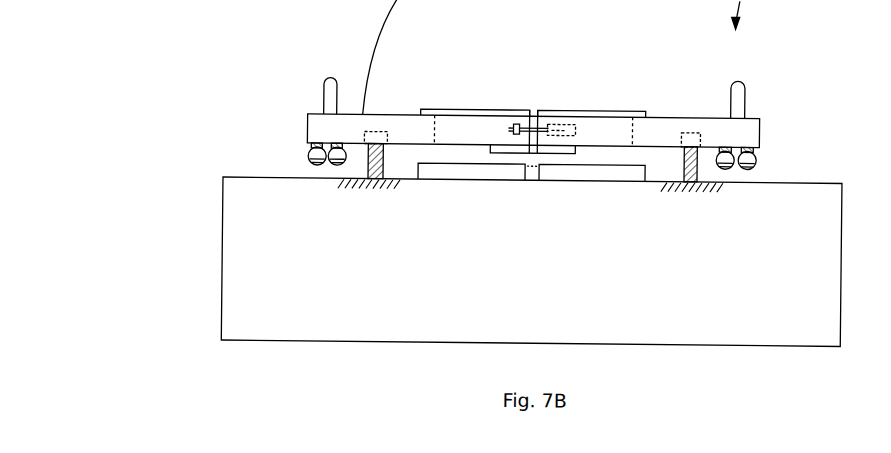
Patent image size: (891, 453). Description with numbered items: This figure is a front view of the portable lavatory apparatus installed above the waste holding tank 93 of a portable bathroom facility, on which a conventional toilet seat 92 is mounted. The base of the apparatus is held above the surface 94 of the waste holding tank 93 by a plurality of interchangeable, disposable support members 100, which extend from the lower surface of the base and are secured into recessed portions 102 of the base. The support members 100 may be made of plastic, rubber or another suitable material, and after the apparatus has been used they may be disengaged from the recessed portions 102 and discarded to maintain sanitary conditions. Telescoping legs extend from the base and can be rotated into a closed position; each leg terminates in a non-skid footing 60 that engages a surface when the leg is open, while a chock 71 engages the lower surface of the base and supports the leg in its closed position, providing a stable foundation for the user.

The non-skid footing 60 is at (757, 157).
The chock 71 is at (759, 144).
The conventional toilet seat 92 is at (433, 178).
The waste holding tank 93 is at (222, 227).
The surface of waste holding tank 94 is at (355, 184).
The interchangeable, disposable support member 100 is at (683, 160).
The recessed portion 102 is at (695, 128).